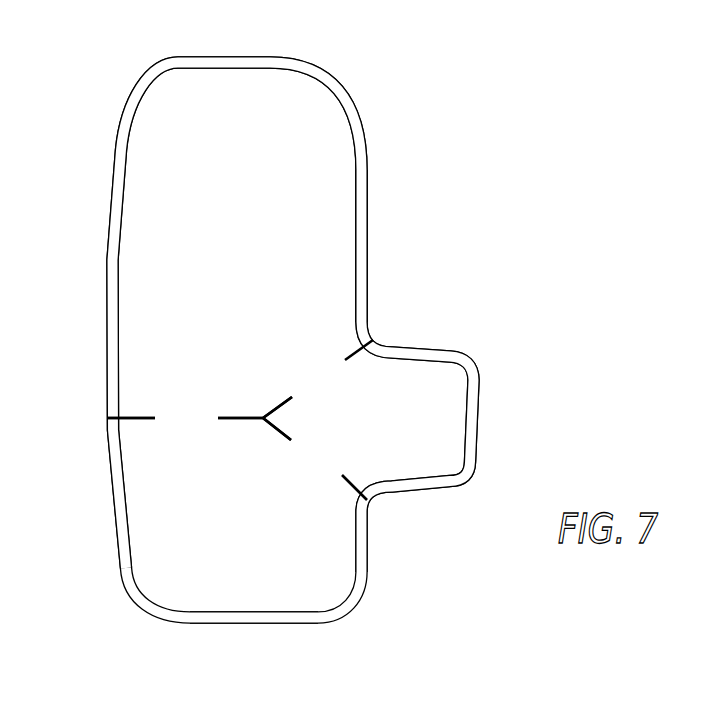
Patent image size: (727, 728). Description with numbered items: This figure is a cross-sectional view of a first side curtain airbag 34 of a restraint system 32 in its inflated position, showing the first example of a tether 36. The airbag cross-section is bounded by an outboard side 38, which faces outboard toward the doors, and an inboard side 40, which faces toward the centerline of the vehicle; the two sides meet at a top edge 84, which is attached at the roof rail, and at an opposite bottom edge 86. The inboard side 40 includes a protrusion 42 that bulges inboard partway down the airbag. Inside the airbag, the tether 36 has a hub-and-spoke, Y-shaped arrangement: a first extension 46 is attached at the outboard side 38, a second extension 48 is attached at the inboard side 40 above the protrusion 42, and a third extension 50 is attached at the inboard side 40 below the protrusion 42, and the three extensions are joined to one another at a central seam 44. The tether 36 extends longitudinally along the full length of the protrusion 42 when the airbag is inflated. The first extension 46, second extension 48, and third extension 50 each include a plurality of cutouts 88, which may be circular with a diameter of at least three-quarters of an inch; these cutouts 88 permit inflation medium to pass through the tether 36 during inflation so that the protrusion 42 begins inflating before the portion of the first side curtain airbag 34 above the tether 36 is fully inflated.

The restraint system 32 is at (440, 75).
The first side curtain airbag 34 is at (373, 208).
The tether 36 is at (233, 410).
The outboard side 38 is at (105, 290).
The inboard side 40 is at (368, 255).
The protrusion 42 is at (479, 410).
The central seam 44 is at (262, 416).
The first extension 46 is at (140, 420).
The second extension 48 is at (360, 356).
The third extension 50 is at (350, 485).
The top edge 84 is at (270, 57).
The bottom edge 86 is at (217, 623).
The cutouts 88 is at (155, 419).